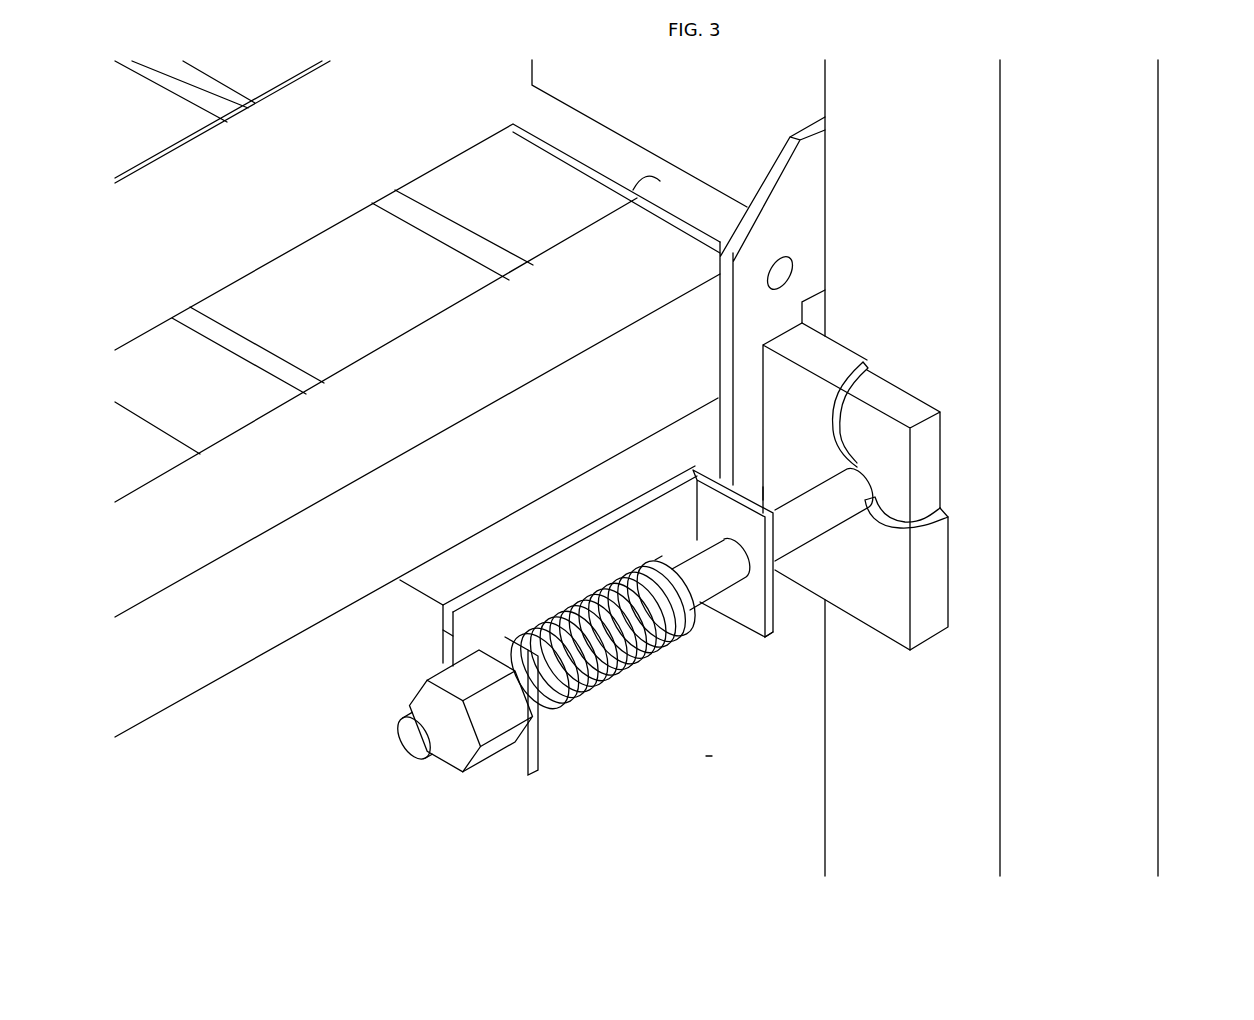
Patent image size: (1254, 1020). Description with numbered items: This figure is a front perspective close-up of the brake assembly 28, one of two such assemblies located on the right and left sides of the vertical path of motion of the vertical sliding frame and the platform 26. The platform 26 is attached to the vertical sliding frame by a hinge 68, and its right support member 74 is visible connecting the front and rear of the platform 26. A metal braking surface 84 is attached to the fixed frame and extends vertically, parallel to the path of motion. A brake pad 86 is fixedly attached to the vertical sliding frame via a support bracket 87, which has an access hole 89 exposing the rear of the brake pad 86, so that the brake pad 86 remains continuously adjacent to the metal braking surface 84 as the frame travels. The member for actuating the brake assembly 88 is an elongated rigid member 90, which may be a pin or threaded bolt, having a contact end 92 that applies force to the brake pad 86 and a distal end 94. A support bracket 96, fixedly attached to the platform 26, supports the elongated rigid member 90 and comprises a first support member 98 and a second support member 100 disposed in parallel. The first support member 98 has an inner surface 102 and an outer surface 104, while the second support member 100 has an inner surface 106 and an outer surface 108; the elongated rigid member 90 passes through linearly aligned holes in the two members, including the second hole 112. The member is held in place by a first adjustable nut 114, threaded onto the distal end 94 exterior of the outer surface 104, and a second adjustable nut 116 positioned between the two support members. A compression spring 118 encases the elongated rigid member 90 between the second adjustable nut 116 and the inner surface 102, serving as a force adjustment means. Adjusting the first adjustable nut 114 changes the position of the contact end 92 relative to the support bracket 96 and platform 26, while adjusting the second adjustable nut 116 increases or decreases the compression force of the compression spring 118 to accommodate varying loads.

The platform 26 is at (178, 712).
The brake assembly 28 is at (709, 755).
The hinge 68 is at (776, 256).
The right support member 74 is at (248, 664).
The metal braking surface 84 is at (958, 97).
The brake pad 86 is at (943, 450).
The support bracket 87 is at (950, 557).
The member for actuating the brake assembly 88 is at (581, 708).
The access hole 89 is at (866, 527).
The elongated rigid member 90 is at (808, 541).
The contact end 92 is at (863, 481).
The distal end 94 is at (413, 762).
The support bracket 96 is at (443, 638).
The first support member 98 is at (514, 765).
The second support member 100 is at (775, 592).
The inner surface 102 is at (515, 625).
The outer surface 104 is at (440, 650).
The inner surface 106 is at (744, 600).
The outer surface 108 is at (760, 487).
The second hole 112 is at (720, 528).
The first adjustable nut 114 is at (508, 730).
The second adjustable nut 116 is at (660, 556).
The compression spring 118 is at (621, 690).